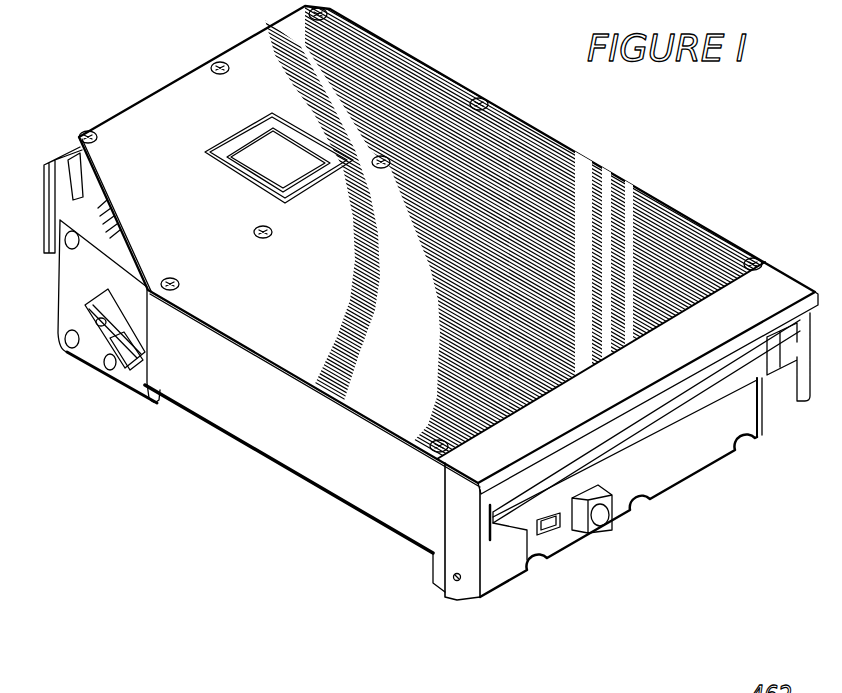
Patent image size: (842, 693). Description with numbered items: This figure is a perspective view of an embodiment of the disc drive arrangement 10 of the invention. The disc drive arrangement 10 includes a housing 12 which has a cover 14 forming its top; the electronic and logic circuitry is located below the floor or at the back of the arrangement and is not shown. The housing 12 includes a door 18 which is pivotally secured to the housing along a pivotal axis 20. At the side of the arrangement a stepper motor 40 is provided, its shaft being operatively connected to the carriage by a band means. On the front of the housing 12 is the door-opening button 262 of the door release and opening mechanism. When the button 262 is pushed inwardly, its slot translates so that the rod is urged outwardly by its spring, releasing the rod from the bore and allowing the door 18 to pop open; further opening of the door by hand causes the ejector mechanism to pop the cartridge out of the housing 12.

The disc drive arrangement 10 is at (470, 62).
The housing 12 is at (580, 150).
The cover 14 is at (290, 292).
The door 18 is at (768, 400).
The pivotal axis 20 is at (456, 582).
The stepper motor 40 is at (87, 350).
The door-opening button 262 is at (600, 522).